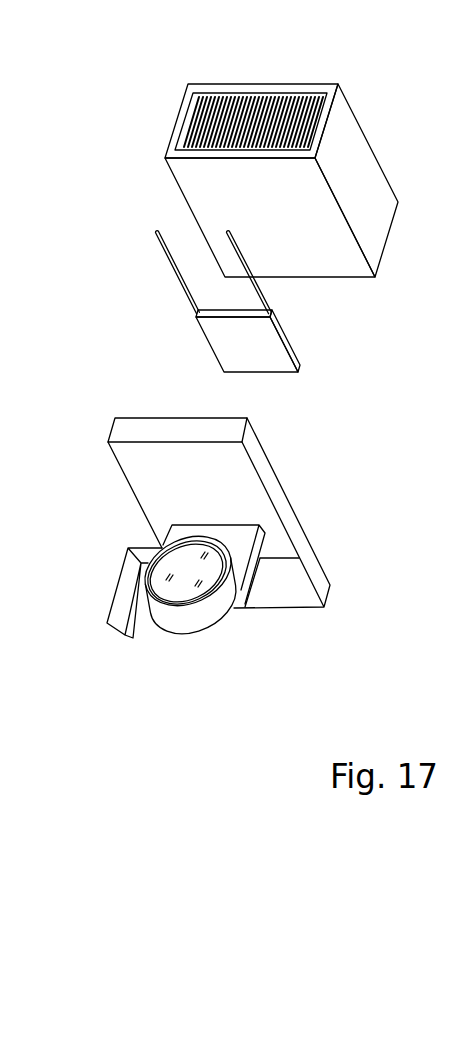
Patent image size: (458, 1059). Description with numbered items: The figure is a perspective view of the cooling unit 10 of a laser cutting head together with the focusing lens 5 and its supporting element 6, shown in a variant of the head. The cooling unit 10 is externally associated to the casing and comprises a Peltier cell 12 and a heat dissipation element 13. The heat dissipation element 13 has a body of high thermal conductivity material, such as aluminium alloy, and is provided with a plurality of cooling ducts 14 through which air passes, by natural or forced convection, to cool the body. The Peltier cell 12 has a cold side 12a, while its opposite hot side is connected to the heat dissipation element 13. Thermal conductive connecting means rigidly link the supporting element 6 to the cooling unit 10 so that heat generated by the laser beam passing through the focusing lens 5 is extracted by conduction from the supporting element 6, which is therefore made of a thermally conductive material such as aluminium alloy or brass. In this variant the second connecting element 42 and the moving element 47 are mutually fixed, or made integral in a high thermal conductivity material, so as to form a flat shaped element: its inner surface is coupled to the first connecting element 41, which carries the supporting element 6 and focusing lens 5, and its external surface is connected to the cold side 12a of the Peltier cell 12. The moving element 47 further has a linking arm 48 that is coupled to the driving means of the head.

The cooling unit 10 is at (93, 71).
The heat dissipation element 13 is at (373, 190).
The cooling ducts 14 is at (255, 97).
The Peltier cell 12 is at (280, 355).
The cold side 12a is at (235, 340).
The second connecting element 42 is at (245, 483).
The first connecting element 41 is at (243, 545).
The moving element 47 is at (292, 595).
The linking arm 48 is at (122, 635).
The supporting element 6 is at (228, 610).
The focusing lens 5 is at (180, 595).